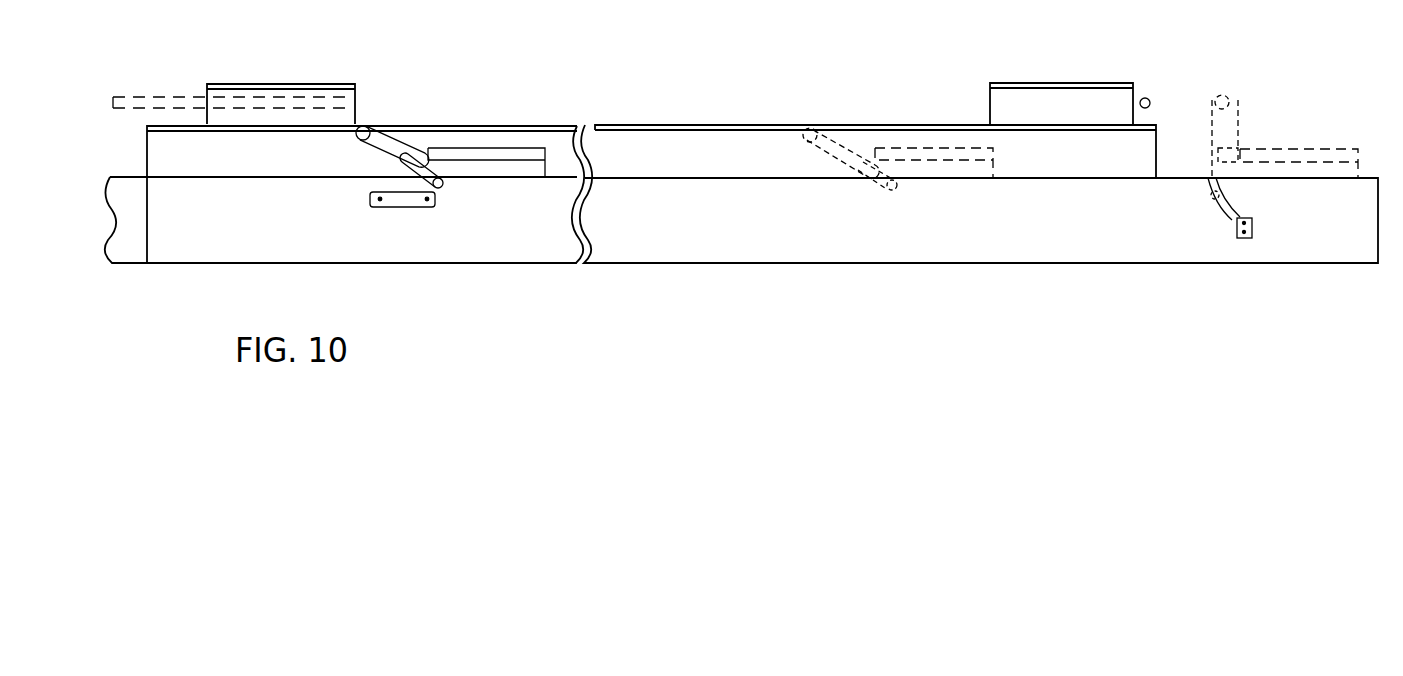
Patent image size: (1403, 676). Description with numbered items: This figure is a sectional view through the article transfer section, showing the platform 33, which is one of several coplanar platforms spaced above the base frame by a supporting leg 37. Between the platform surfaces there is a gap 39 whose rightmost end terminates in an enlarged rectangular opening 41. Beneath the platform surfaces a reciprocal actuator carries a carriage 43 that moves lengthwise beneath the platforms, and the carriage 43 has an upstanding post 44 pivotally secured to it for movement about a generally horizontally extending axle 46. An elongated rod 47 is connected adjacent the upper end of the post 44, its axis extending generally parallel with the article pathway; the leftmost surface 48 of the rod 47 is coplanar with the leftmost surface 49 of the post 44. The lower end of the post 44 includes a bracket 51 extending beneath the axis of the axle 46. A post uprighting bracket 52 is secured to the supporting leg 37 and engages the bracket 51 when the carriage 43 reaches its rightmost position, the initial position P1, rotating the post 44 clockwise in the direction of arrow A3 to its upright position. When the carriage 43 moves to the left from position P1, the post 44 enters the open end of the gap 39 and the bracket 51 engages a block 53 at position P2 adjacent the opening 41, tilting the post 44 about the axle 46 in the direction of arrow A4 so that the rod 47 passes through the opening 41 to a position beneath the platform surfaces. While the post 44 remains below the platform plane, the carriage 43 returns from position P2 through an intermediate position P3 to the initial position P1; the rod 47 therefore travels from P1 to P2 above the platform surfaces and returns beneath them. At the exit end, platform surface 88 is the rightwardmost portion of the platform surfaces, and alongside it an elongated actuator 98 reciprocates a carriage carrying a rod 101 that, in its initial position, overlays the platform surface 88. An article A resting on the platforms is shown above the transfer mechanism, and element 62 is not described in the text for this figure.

The platform 33 is at (722, 123).
The supporting leg 37 is at (1075, 250).
The gap 39 is at (672, 122).
The rectangular opening 41 is at (362, 140).
The carriage 43 is at (500, 167).
The upstanding post 44 is at (390, 145).
The axle 46 is at (425, 143).
The elongated rod 47 is at (353, 160).
The leftmost surface of the rod 48 is at (1210, 100).
The leftmost surface of the post 49 is at (1212, 125).
The bracket 51 is at (440, 189).
The post uprighting bracket 52 is at (1240, 202).
The block 53 is at (406, 199).
The sensor 62 is at (1145, 98).
The platform surface 88 is at (183, 125).
The elongated actuator 98 is at (132, 252).
The rod 101 is at (235, 103).
The article A is at (318, 78).
The arrow A3 is at (1167, 158).
The arrow A4 is at (372, 123).
The initial position P1 is at (1300, 188).
The position P2 is at (495, 183).
The intermediate position P3 is at (942, 186).